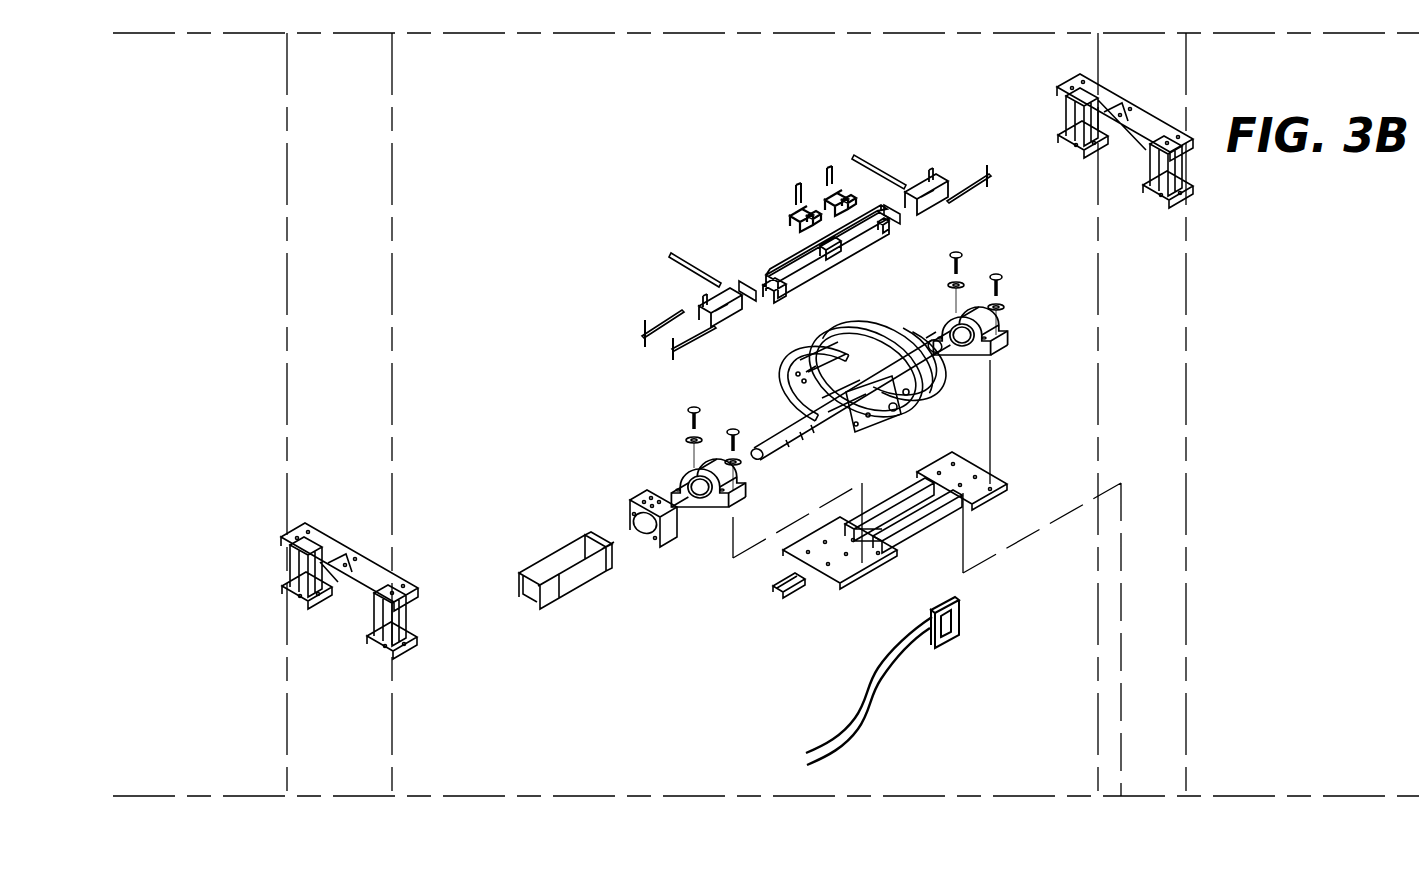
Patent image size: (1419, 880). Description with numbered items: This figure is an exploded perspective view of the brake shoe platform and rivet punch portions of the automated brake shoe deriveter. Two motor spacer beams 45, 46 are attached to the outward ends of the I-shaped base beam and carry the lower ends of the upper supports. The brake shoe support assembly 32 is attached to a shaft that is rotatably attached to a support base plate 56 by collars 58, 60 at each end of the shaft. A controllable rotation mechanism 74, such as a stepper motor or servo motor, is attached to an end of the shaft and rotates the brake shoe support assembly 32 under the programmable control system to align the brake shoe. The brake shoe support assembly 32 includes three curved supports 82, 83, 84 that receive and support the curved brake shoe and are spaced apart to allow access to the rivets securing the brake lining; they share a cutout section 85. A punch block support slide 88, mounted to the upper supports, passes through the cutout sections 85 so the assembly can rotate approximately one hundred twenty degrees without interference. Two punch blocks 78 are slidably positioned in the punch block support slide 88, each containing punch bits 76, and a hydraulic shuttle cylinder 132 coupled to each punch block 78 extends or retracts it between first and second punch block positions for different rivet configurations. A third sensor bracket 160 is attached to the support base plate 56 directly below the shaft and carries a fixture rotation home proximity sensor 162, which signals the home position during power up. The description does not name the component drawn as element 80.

The brake shoe support assembly 32 is at (862, 335).
The motor spacer beam 45 is at (293, 597).
The motor spacer beam 46 is at (1060, 120).
The support base plate 56 is at (860, 584).
The collar 58 is at (1008, 350).
The collar 60 is at (685, 482).
The controllable rotation mechanism 74 is at (549, 553).
The punch bit 76 is at (830, 166).
The punch block 78 is at (793, 212).
The bar 80 is at (790, 256).
The curved support 82 is at (928, 392).
The curved support 83 is at (900, 410).
The curved support 84 is at (880, 426).
The cutout section 85 is at (800, 396).
The punch block support slide 88 is at (810, 282).
The hydraulic shuttle cylinder 132 is at (703, 306).
The third sensor bracket 160 is at (777, 583).
The fixture rotation home proximity sensor 162 is at (800, 590).